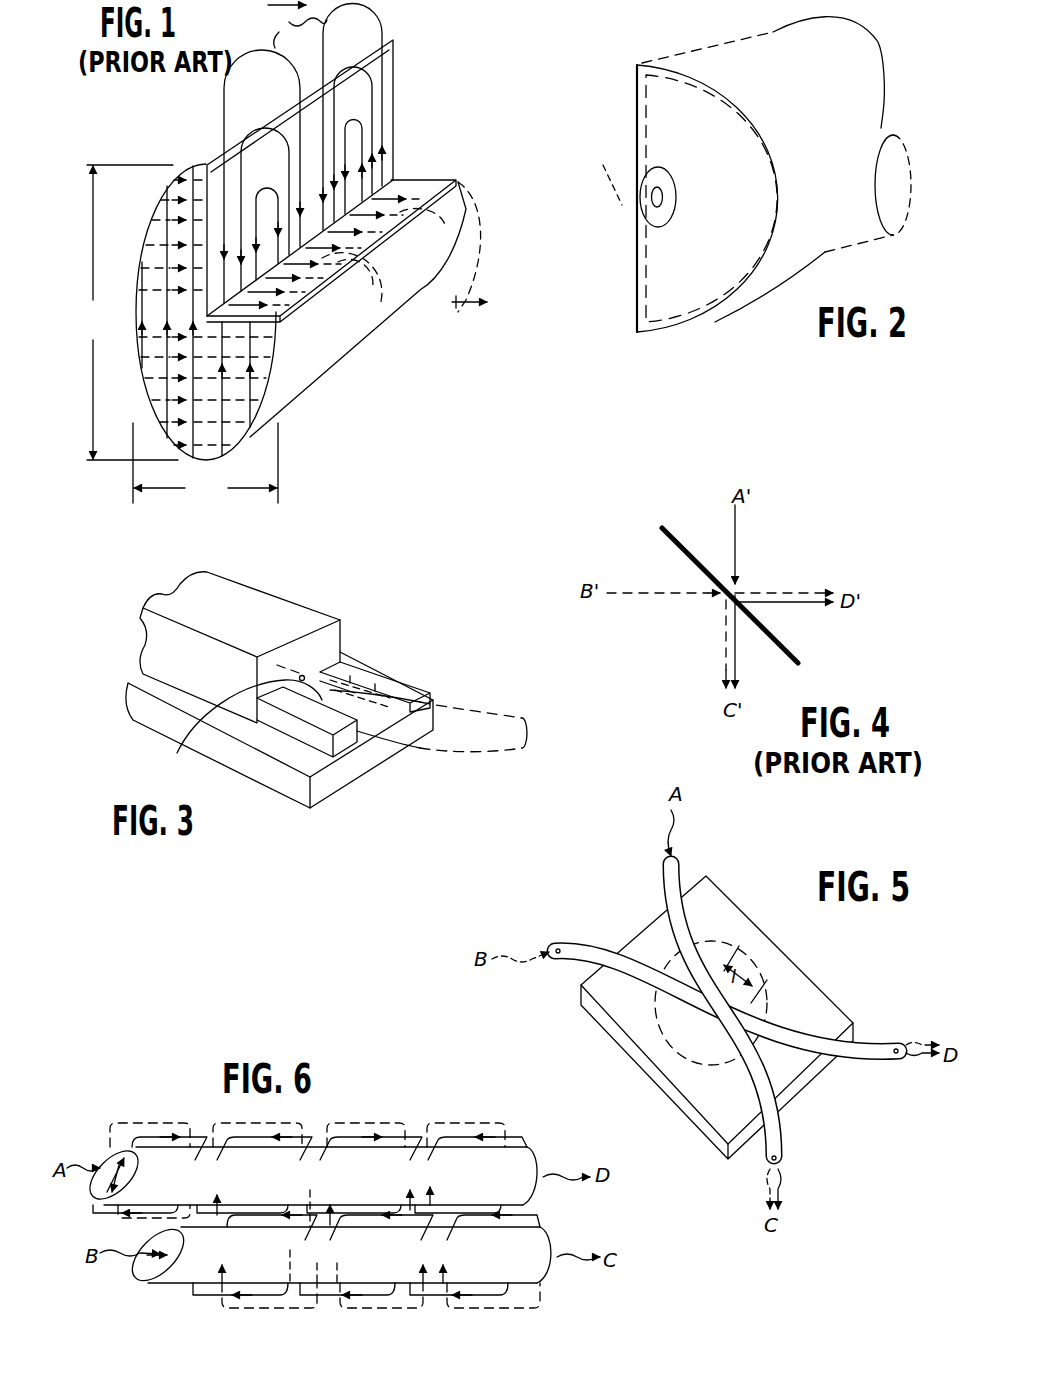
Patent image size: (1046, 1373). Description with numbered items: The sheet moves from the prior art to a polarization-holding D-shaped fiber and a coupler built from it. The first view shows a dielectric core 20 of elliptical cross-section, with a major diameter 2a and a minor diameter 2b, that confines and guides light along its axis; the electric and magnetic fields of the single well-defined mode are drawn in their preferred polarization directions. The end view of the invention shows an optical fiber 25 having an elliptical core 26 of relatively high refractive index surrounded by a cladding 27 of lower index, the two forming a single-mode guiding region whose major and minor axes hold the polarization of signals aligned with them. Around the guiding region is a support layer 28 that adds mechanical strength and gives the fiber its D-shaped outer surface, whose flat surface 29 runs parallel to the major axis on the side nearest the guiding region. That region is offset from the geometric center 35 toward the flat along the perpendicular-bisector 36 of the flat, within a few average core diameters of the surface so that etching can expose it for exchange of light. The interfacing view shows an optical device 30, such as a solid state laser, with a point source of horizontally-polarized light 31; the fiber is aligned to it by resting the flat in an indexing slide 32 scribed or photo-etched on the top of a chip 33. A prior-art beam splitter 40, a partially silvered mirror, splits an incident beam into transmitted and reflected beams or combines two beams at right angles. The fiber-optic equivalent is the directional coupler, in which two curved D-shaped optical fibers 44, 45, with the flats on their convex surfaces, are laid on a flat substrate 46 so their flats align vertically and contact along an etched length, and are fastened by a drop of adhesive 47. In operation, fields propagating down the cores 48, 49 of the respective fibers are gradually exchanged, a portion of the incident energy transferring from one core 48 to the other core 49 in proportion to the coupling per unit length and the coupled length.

In FIG. 1, the dielectric core 20 is at (293, 358).
In FIG. 1, the major diameter 2a is at (130, 312).
In FIG. 1, the minor diameter 2b is at (205, 463).
In FIG. 2, the optical fiber 25 is at (632, 100).
In FIG. 3, the optical fiber 25 is at (458, 710).
In FIG. 2, the elliptical core 26 is at (663, 192).
In FIG. 3, the elliptical core 26 is at (383, 677).
In FIG. 2, the cladding 27 is at (673, 172).
In FIG. 2, the support layer 28 is at (697, 300).
In FIG. 2, the flat surface 29 is at (633, 223).
In FIG. 2, the geometric center 35 is at (710, 197).
In FIG. 2, the perpendicular-bisector 36 is at (600, 175).
In FIG. 3, the optical device 30 is at (290, 612).
In FIG. 3, the point source of horizontally-polarized light 31 is at (305, 676).
In FIG. 3, the indexing slide 32 is at (279, 730).
In FIG. 3, the chip 33 is at (345, 670).
In FIG. 4, the beam splitter 40 is at (780, 638).
In FIG. 5, the D-shaped optical fiber 44 is at (683, 884).
In FIG. 5, the D-shaped optical fiber 45 is at (596, 944).
In FIG. 5, the flat substrate 46 is at (724, 909).
In FIG. 5, the drop of adhesive 47 is at (815, 985).
In FIG. 6, the core 48 is at (537, 1157).
In FIG. 6, the core 49 is at (547, 1230).